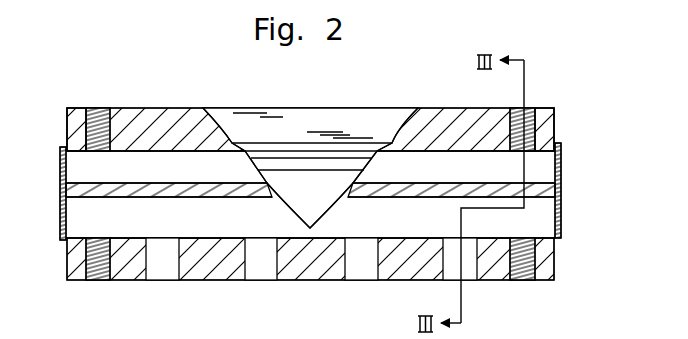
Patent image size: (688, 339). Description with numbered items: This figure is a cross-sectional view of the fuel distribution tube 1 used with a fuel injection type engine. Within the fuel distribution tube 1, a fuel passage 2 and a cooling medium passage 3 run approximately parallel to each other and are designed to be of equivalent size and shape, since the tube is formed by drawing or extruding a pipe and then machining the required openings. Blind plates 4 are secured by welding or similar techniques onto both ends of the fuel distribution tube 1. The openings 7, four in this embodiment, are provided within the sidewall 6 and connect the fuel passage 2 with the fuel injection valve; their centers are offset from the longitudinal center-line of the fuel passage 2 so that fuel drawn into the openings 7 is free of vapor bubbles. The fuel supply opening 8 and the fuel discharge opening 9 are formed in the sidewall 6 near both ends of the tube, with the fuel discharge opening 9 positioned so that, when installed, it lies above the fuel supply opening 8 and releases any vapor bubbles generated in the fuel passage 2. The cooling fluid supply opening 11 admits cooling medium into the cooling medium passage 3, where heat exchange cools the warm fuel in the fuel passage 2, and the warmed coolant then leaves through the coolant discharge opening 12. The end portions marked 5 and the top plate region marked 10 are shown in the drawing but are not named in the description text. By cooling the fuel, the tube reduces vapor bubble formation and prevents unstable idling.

The fuel distribution tube 1 is at (322, 100).
The fuel passage 2 is at (427, 223).
The cooling medium passage 3 is at (457, 178).
The blind plate 4 is at (60, 188).
The end blocks of top plate 5 is at (67, 128).
The sidewall 6 is at (217, 282).
The openings 7 is at (160, 270).
The fuel supply opening 8 is at (523, 282).
The fuel discharge opening 9 is at (95, 282).
The top plate 10 is at (460, 107).
The cooling fluid supply opening 11 is at (533, 107).
The coolant discharge opening 12 is at (98, 107).